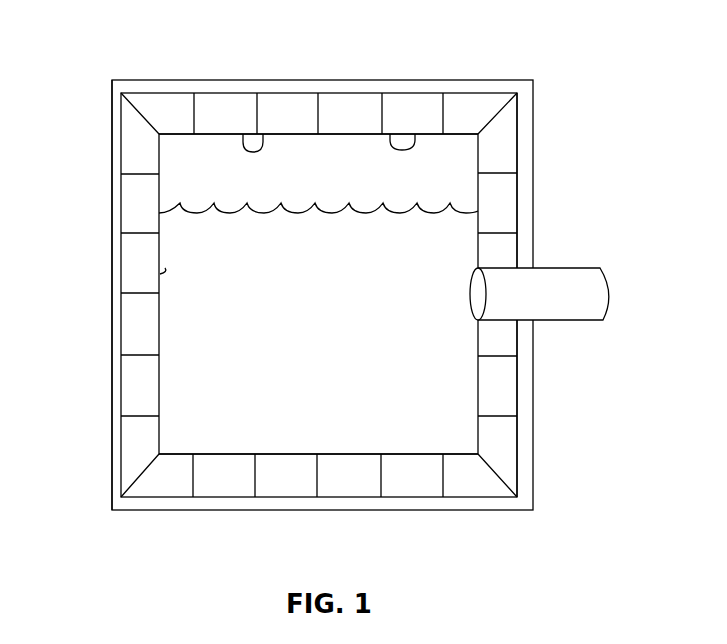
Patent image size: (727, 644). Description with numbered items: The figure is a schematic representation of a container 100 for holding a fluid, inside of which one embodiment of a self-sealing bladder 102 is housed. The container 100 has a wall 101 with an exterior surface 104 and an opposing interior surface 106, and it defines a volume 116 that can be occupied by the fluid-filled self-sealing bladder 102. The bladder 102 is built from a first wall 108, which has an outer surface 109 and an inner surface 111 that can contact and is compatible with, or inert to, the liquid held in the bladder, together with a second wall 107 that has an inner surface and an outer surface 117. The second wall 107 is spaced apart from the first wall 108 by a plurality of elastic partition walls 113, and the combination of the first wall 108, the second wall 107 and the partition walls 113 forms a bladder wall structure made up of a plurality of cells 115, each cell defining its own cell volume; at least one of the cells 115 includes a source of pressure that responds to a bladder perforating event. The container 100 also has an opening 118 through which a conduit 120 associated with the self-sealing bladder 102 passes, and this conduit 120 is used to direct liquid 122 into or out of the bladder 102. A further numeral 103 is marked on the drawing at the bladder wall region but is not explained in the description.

The container assembly 100 is at (535, 112).
The outer housing 101 is at (535, 162).
The top wall blocks 102 is at (343, 113).
The left wall 103 is at (130, 254).
The right wall blocks 104 is at (535, 213).
The wall outer surface 106 is at (527, 246).
The corner joints 107 is at (488, 92).
The hooks 108 is at (415, 134).
The hook 109 is at (263, 134).
The top wall inner surface 111 is at (217, 133).
The wall blocks 113 is at (143, 295).
The corner blocks 115 is at (133, 396).
The gas space / liquid level 116 is at (197, 173).
The outer housing side 117 is at (113, 143).
The pipe opening 118 is at (480, 305).
The pipe 120 is at (582, 308).
The inner cavity 122 is at (203, 397).